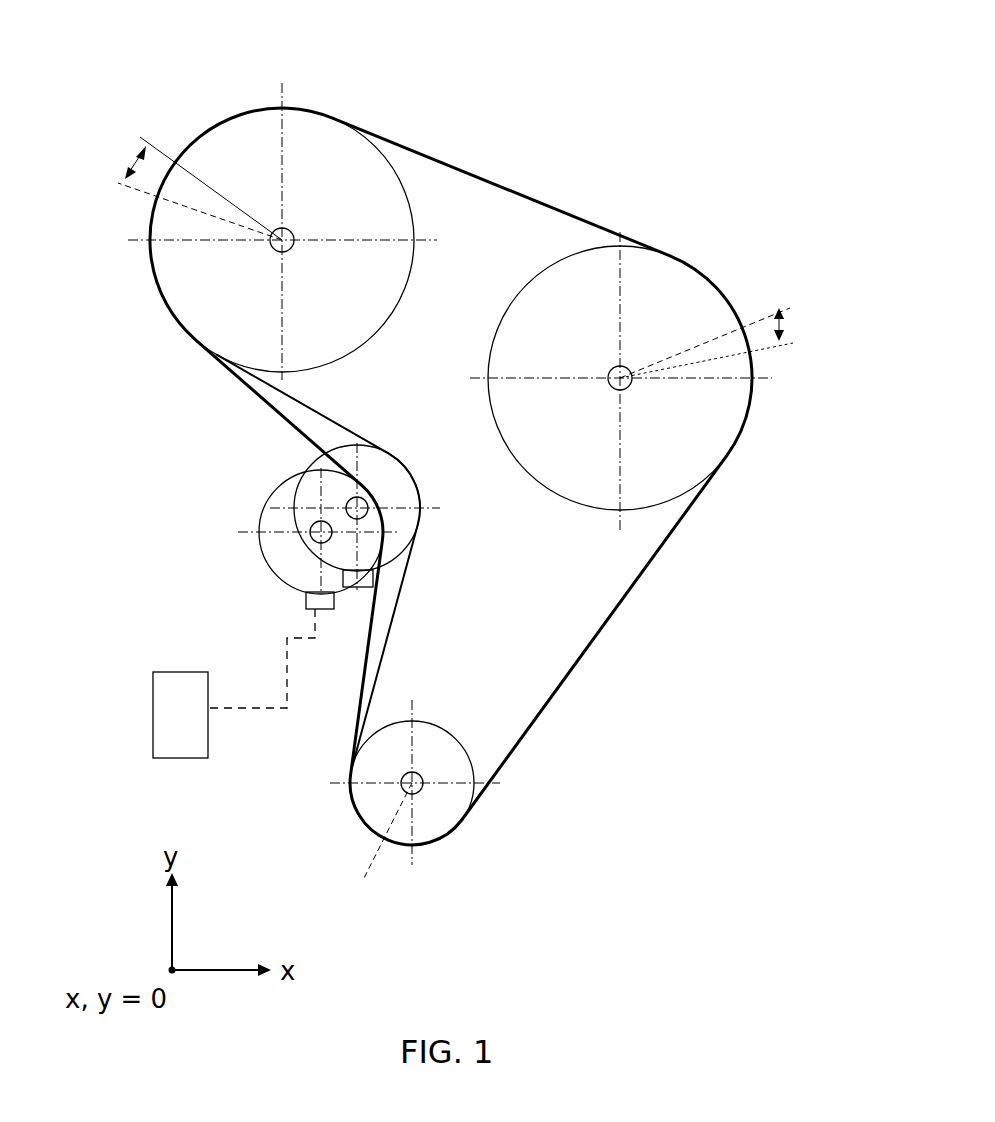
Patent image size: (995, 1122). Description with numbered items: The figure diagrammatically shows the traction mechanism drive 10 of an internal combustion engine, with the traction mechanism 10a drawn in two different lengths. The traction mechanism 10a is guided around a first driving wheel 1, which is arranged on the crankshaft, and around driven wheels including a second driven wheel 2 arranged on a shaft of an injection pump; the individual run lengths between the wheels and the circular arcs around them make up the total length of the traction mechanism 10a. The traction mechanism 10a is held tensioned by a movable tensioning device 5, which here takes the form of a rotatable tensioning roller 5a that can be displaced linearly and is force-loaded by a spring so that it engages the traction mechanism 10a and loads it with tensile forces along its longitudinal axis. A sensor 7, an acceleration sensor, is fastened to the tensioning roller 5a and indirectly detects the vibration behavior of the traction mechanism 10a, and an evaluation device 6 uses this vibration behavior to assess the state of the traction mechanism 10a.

The first driving wheel 1 is at (352, 792).
The second driven wheel 2 is at (297, 123).
The movable tensioning device 5 is at (273, 520).
The tensioning roller 5a is at (319, 538).
The evaluation device 6 is at (187, 726).
The sensor 7 is at (312, 597).
The traction mechanism drive 10 is at (714, 122).
The traction mechanism 10a is at (600, 637).